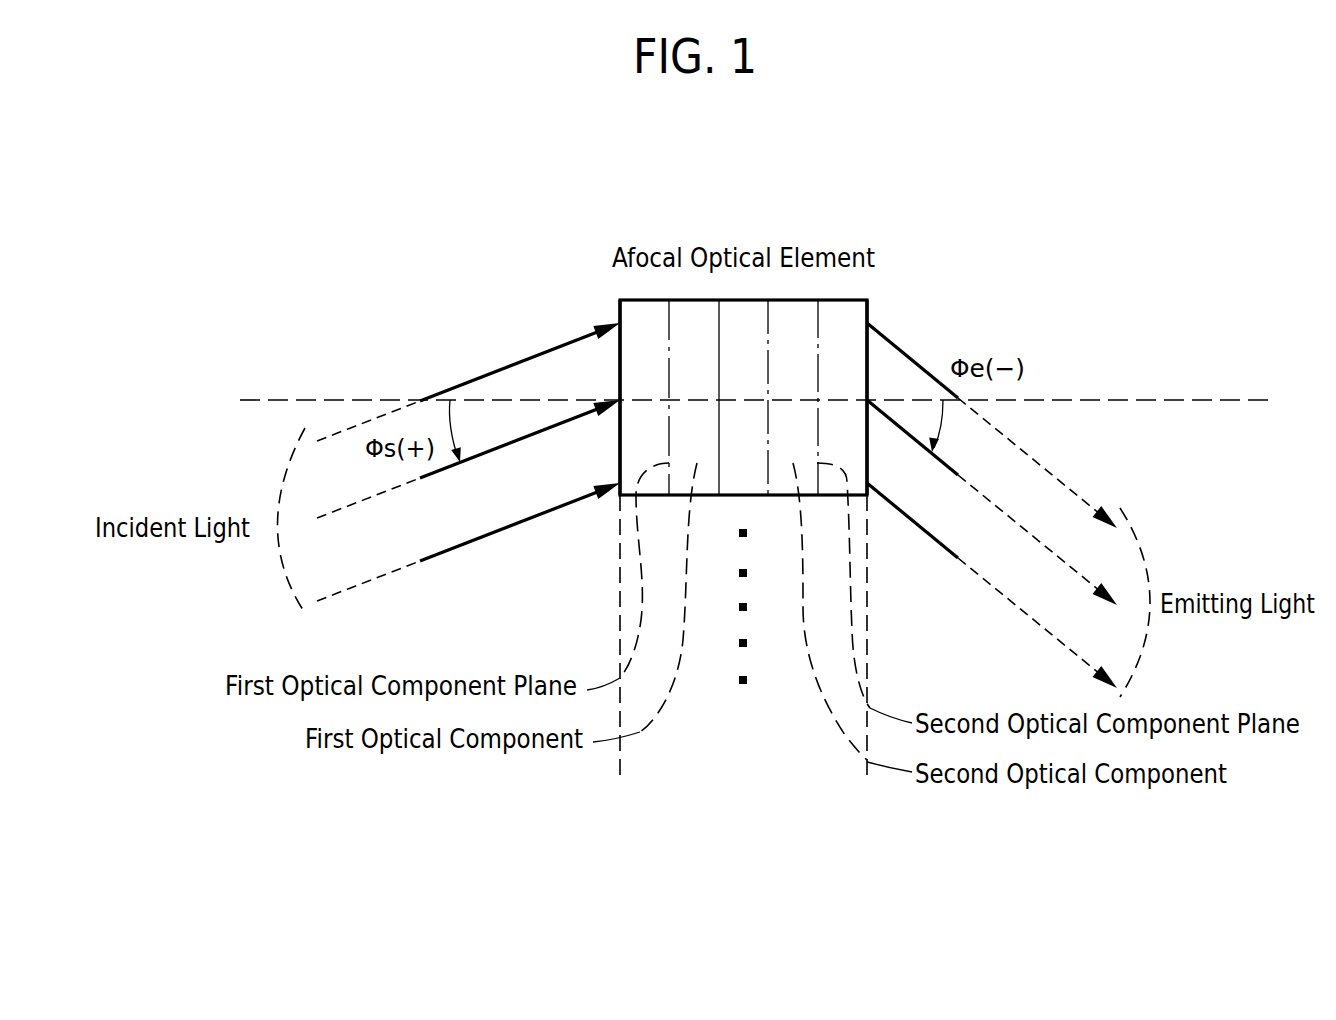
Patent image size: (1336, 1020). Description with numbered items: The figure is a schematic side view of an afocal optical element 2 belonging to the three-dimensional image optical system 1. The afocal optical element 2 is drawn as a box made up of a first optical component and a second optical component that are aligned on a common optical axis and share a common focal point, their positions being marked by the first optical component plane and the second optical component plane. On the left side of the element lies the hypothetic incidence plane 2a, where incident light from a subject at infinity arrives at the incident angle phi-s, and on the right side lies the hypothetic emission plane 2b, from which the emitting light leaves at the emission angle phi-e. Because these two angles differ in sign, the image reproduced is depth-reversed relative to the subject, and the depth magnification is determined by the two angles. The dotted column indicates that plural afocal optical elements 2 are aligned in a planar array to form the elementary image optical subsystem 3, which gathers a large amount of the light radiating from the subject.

The three-dimensional image optical system 1 is at (693, 808).
The afocal optical element 2 is at (845, 320).
The hypothetic incidence plane 2a is at (617, 308).
The hypothetic emission plane 2b is at (870, 308).
The elementary image optical subsystem 3 is at (767, 708).